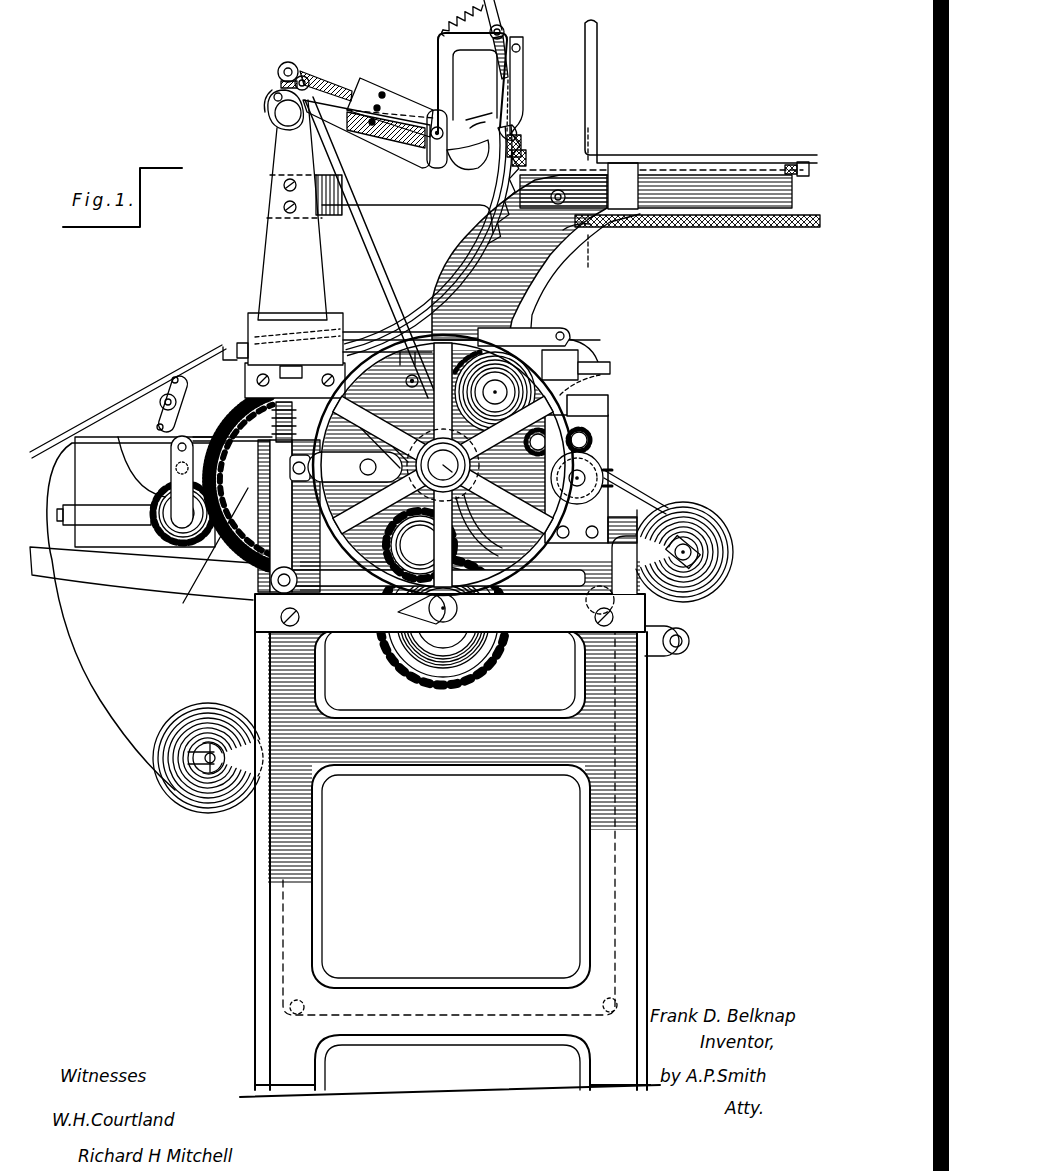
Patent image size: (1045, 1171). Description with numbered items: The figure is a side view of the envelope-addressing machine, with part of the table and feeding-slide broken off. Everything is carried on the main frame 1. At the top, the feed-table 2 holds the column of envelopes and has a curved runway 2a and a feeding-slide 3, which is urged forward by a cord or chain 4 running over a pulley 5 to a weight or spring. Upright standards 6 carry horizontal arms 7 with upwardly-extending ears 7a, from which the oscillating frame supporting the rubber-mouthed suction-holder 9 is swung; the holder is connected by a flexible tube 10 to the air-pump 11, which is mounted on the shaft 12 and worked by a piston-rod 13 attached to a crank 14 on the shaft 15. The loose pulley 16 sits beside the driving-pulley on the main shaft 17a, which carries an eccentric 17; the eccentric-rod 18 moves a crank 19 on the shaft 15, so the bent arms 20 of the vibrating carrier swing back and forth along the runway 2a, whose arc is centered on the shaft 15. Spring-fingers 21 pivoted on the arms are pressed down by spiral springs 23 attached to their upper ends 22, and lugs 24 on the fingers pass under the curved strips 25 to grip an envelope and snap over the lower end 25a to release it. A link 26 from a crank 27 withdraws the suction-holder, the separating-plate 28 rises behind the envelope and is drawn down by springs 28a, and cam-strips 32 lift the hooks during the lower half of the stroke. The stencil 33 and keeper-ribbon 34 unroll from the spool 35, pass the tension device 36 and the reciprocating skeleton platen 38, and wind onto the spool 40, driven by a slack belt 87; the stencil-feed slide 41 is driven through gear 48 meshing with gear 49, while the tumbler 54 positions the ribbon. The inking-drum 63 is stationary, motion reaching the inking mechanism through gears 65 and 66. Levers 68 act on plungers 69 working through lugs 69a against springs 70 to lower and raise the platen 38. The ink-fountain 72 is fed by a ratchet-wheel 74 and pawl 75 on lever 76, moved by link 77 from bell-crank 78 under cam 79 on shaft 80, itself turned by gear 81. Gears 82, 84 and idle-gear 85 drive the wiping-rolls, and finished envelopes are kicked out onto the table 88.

The main frame 1 is at (340, 752).
The feed-table 2 is at (664, 198).
The curved runway 2a is at (440, 272).
The feeding-slide 3 is at (598, 97).
The cord or chain 4 is at (690, 226).
The pulley 5 is at (572, 237).
The upright standards 6 is at (300, 210).
The horizontal arms 7 is at (368, 147).
The upwardly-extending ears 7a is at (523, 50).
The suction-holder 9 is at (520, 130).
The flexible tube 10 is at (470, 152).
The air-pump 11 is at (378, 88).
The shaft 12 is at (430, 108).
The piston-rod 13 is at (328, 84).
The crank 14 is at (294, 86).
The shaft 15 is at (282, 117).
The loose pulley 16 is at (612, 398).
The eccentric 17 is at (400, 437).
The main shaft 17a is at (458, 472).
The eccentric-rod 18 is at (362, 242).
The crank 19 is at (278, 78).
The arms of the vibrating carrier 20 is at (445, 70).
The spring-fingers 21 is at (504, 62).
The upper ends of the fingers 22 is at (500, 22).
The spiral springs 23 is at (450, 17).
The lugs 24 is at (522, 146).
The curved strips 25 is at (478, 258).
The lower end of the strips 25a is at (239, 343).
The link 26 is at (472, 130).
The crank 27 is at (266, 104).
The separating-plate 28 is at (528, 162).
The springs 28a is at (496, 205).
The cam-strips 32 is at (362, 322).
The stencil 33 is at (65, 608).
The keeper-ribbon 34 is at (618, 820).
The spool 35 is at (210, 705).
The tension device 36 is at (180, 398).
The reciprocating skeleton platen 38 is at (260, 370).
The winding-up spool 40 is at (735, 552).
The slide 41 is at (600, 370).
The gear 48 is at (495, 392).
The gear 49 is at (488, 518).
The tumbler 54 is at (544, 328).
The inking-drum 63 is at (240, 540).
The gear 65 is at (215, 551).
The gear 66 is at (413, 545).
The levers 68 is at (355, 467).
The plungers 69 is at (274, 422).
The lugs 69a is at (288, 468).
The springs 70 is at (373, 433).
The ink-fountain 72 is at (136, 492).
The ratchet-wheel 74 is at (180, 546).
The pawl 75 is at (175, 470).
The lever 76 is at (168, 447).
The link 77 is at (202, 437).
The bell-crank 78 is at (289, 516).
The cam 79 is at (395, 610).
The shaft 80 is at (458, 608).
The gear 81 is at (498, 668).
The gear 82 is at (592, 438).
The gear 84 is at (614, 472).
The idle-gear 85 is at (536, 438).
The belt 87 is at (650, 496).
The table 88 is at (117, 403).